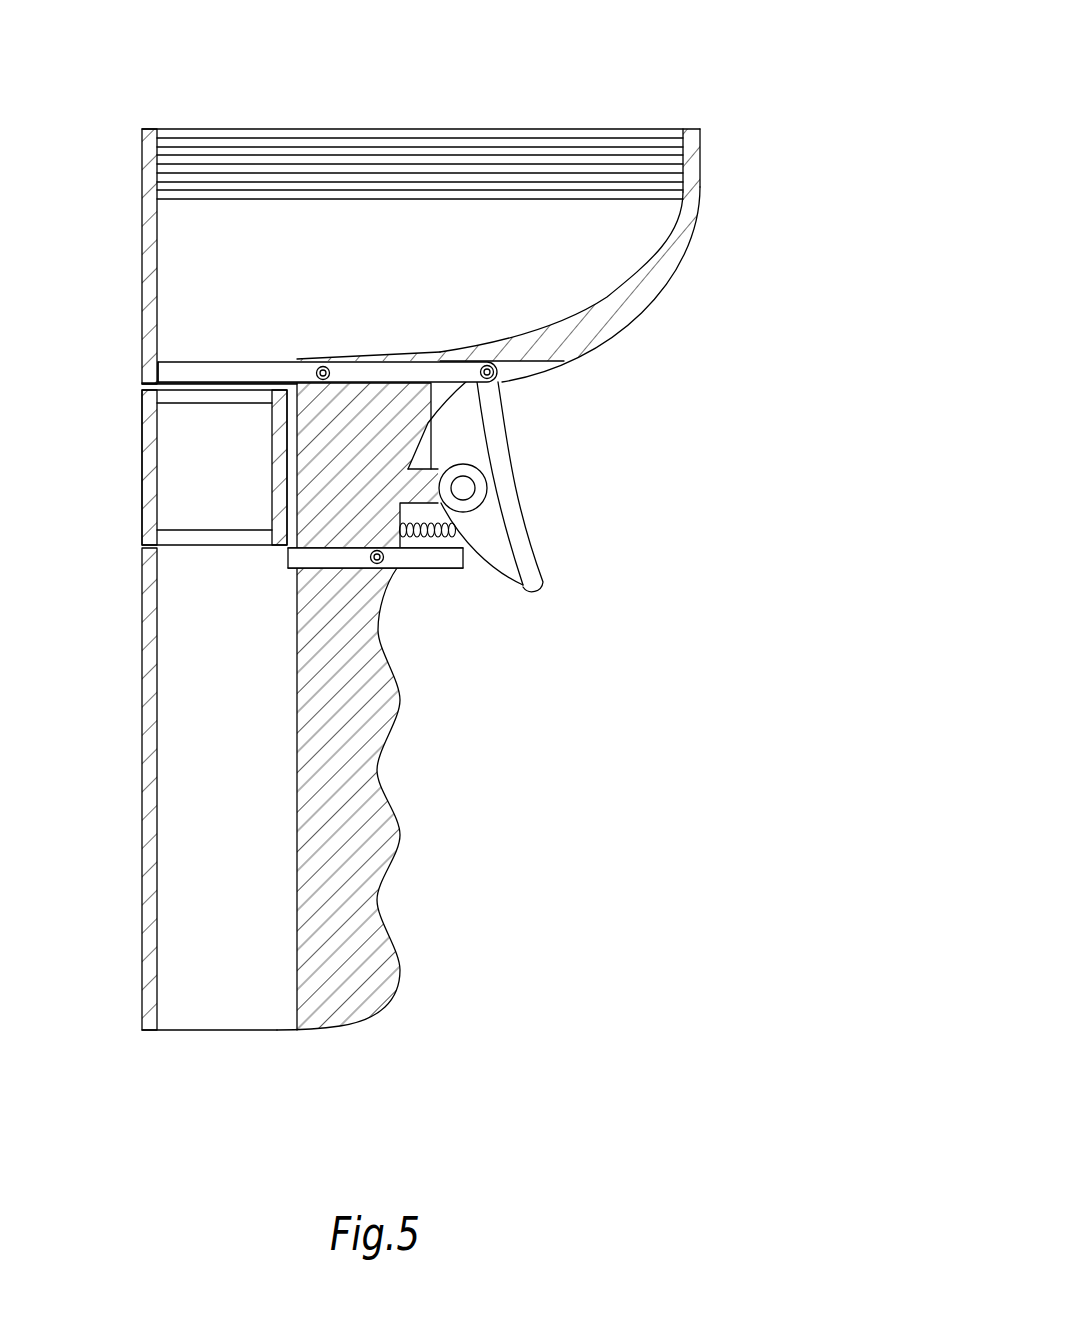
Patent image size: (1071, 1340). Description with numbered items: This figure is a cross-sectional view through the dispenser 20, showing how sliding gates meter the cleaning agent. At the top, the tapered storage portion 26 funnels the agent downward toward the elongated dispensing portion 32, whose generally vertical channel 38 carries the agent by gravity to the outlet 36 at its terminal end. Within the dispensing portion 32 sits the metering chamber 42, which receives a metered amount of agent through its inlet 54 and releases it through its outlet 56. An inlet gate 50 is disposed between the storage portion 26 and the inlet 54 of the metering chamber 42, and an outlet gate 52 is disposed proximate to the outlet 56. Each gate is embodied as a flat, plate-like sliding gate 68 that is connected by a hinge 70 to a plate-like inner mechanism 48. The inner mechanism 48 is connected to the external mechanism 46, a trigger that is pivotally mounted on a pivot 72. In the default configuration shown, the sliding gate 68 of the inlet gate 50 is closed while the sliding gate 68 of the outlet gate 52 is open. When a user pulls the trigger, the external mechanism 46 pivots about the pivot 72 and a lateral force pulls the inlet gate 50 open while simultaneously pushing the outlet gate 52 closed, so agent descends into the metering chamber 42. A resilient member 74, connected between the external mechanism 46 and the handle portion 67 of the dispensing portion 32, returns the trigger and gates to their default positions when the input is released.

The dispenser 20 is at (657, 53).
The storage portion 26 is at (720, 213).
The dispensing portion 32 is at (515, 667).
The outlet 36 is at (200, 1060).
The channel 38 is at (187, 845).
The metering chamber 42 is at (142, 476).
The external mechanism 46 is at (520, 545).
The inner mechanism 48 is at (402, 343).
The inlet gate 50 is at (177, 367).
The outlet gate 52 is at (322, 566).
The inlet 54 is at (185, 407).
The outlet 56 is at (190, 525).
The handle portion 67 is at (387, 832).
The sliding gate 68 is at (258, 370).
The hinge 70 is at (322, 366).
The pivot 72 is at (465, 472).
The resilient member 74 is at (443, 525).